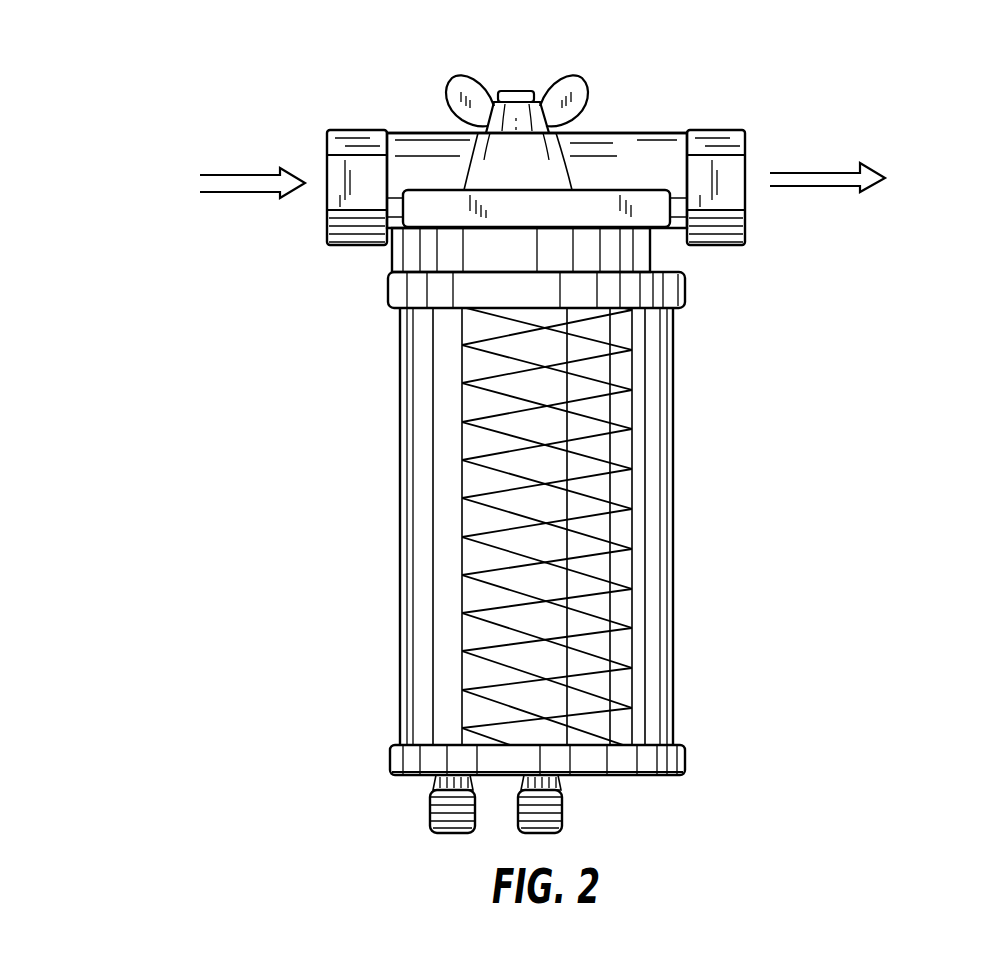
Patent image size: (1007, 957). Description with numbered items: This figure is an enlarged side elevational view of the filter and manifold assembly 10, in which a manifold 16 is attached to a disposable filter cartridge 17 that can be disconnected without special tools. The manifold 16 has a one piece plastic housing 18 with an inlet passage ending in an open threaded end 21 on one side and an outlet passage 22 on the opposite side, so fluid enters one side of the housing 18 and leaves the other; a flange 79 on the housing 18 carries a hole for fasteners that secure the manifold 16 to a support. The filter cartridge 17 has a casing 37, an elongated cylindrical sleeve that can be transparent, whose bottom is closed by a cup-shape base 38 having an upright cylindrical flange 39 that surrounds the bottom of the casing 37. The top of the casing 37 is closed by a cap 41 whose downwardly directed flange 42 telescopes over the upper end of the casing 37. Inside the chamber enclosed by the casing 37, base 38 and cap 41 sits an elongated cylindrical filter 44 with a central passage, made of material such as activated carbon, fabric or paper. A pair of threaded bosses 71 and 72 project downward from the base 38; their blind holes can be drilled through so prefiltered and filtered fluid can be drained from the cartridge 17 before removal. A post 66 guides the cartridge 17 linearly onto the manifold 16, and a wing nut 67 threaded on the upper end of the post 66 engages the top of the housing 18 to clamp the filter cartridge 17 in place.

The filter and manifold assembly 10 is at (629, 88).
The manifold 16 is at (406, 131).
The filter cartridge 17 is at (399, 458).
The housing 18 is at (630, 150).
The threaded end 21 is at (343, 132).
The outlet passage 22 is at (736, 130).
The casing 37 is at (653, 503).
The base 38 is at (641, 777).
The flange 39 is at (389, 762).
The cap 41 is at (650, 272).
The flange 42 is at (392, 289).
The filter 44 is at (598, 572).
The post 66 is at (520, 94).
The wing nut 67 is at (581, 82).
The threaded boss 71 is at (431, 812).
The threaded boss 72 is at (562, 812).
The flange 79 is at (648, 205).